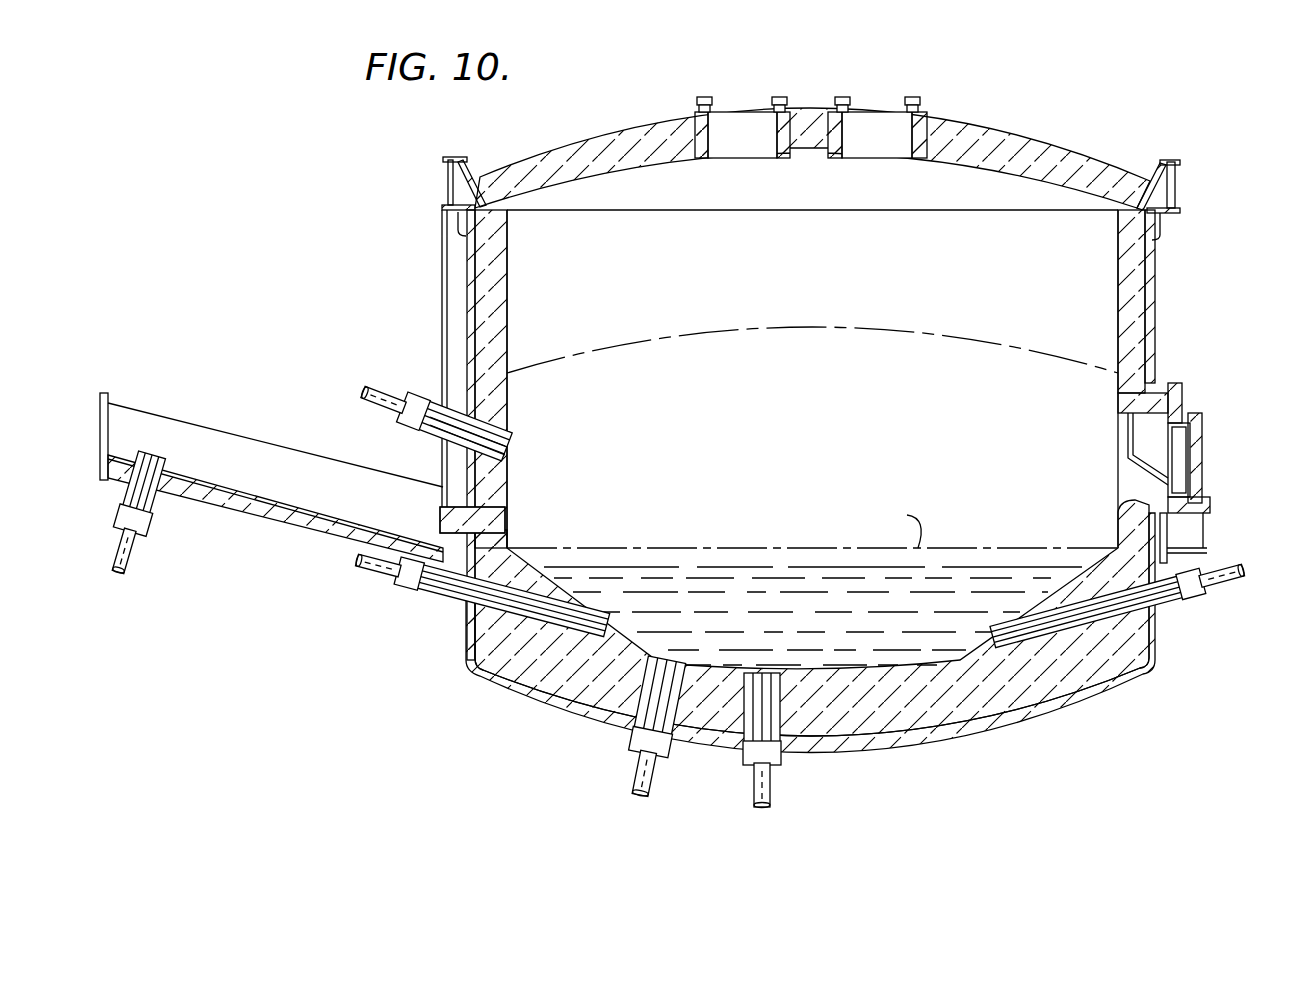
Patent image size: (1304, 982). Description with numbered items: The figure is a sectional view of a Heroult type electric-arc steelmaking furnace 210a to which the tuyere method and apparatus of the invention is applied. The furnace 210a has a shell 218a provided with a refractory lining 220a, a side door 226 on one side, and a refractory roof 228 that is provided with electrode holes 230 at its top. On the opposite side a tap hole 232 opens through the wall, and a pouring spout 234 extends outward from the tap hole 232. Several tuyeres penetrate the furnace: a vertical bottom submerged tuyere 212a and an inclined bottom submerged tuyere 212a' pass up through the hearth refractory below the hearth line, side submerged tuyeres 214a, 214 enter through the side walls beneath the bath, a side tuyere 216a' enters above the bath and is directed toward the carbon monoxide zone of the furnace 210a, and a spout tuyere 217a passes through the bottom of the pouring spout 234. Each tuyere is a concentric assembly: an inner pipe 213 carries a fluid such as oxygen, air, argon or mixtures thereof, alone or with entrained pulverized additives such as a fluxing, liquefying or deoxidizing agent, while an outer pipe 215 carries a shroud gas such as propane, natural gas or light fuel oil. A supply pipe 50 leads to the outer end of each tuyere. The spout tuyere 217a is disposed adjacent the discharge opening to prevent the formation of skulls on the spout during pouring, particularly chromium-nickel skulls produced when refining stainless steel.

The electric-arc steelmaking furnace 210a is at (1054, 139).
The refractory roof 228 is at (983, 134).
The electrode holes 230 is at (856, 118).
The shell 218a is at (1163, 290).
The refractory lining 220a is at (1137, 358).
The side door 226 is at (1204, 448).
The pouring spout 234 is at (237, 433).
The tap hole 232 is at (500, 530).
The side tuyere 216a' is at (440, 395).
The side submerged tuyere 214a is at (433, 599).
The tuyere 214 is at (1188, 608).
The spout tuyere 217a is at (159, 523).
The vertical bottom submerged tuyere 212a is at (620, 718).
The inclined bottom submerged tuyere 212a' is at (803, 734).
The supply pipe 50 is at (370, 402).
The inner pipe 213 is at (152, 472).
The outer pipe 215 is at (143, 460).